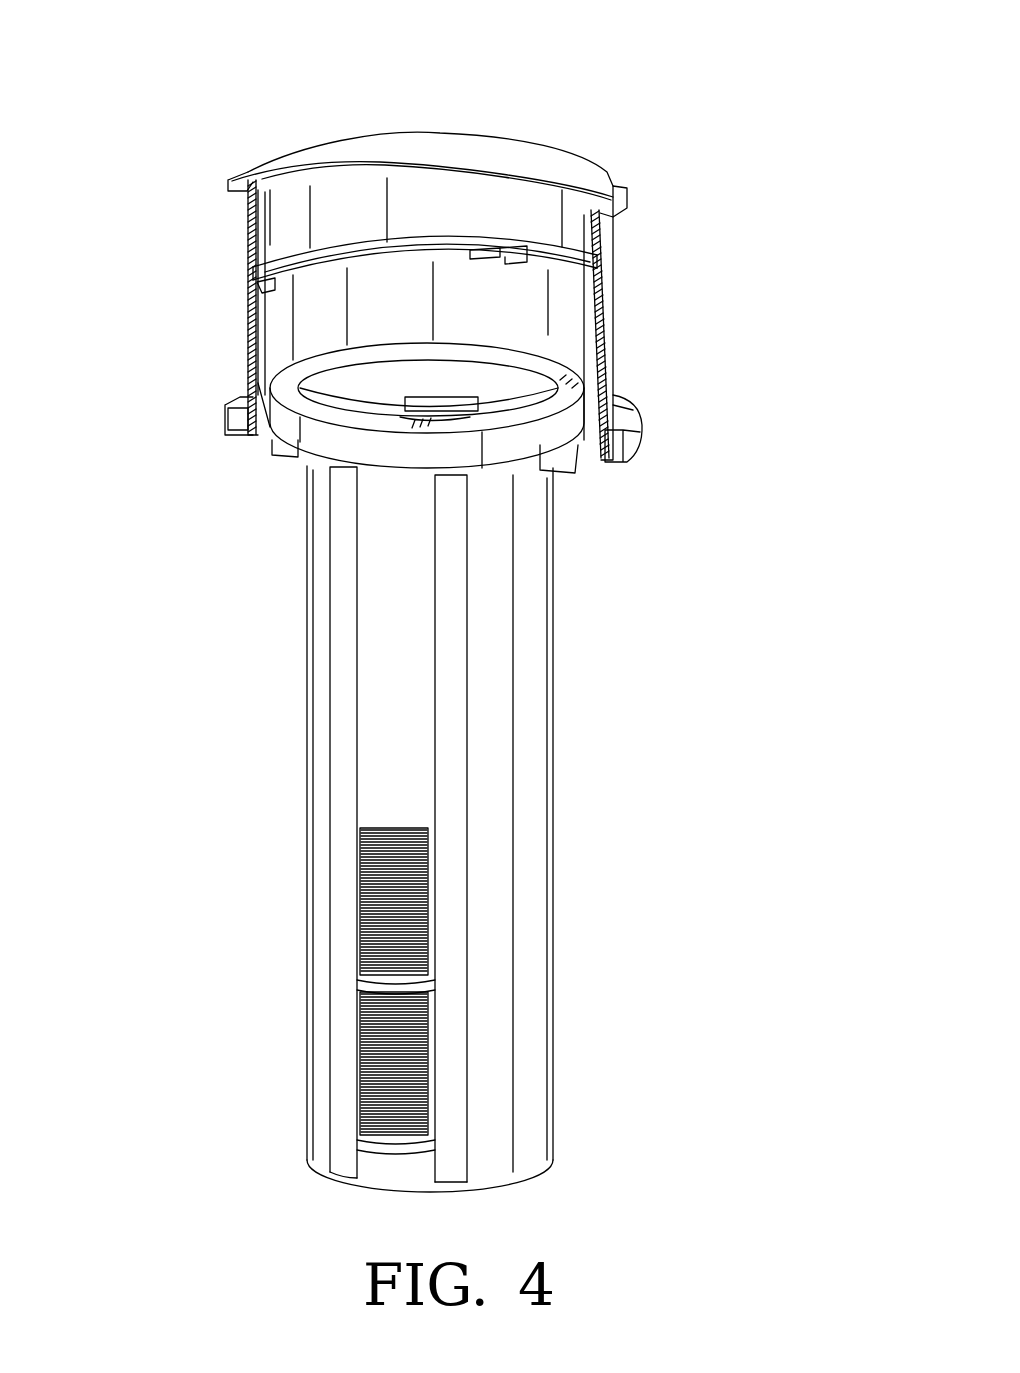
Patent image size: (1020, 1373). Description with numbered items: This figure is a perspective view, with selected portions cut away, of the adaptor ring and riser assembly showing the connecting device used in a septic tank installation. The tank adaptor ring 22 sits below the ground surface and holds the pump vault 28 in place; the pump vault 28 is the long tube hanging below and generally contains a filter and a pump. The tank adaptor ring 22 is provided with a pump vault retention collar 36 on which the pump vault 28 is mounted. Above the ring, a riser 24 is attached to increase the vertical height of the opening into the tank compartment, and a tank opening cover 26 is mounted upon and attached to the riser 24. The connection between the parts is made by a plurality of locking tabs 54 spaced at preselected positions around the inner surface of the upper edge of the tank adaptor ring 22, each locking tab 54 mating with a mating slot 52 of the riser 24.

The tank adaptor ring 22 is at (625, 420).
The riser 24 is at (568, 213).
The tank opening cover 26 is at (573, 167).
The pump vault 28 is at (527, 703).
The pump vault retention collar 36 is at (247, 380).
The mating slot 52 is at (505, 255).
The locking tab 54 is at (483, 250).